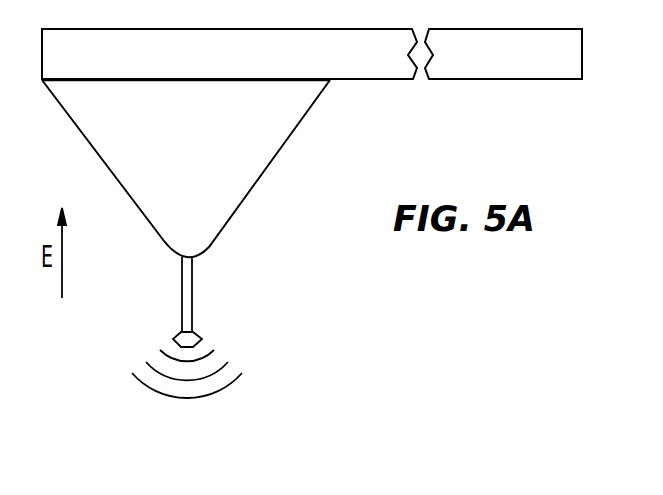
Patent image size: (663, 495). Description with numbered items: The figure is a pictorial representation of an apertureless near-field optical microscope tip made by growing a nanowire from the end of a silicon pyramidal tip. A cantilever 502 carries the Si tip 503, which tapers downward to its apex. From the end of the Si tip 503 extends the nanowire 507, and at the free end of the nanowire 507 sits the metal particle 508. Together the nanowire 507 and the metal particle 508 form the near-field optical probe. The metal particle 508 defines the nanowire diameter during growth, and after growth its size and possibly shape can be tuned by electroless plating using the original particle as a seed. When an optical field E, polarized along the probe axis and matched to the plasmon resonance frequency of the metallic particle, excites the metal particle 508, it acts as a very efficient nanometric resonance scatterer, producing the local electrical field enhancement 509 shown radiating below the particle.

The cantilever 502 is at (377, 80).
The Si tip 503 is at (273, 132).
The nanowire 507 is at (188, 282).
The metal particle 508 is at (175, 338).
The local electrical field enhancement 509 is at (223, 387).